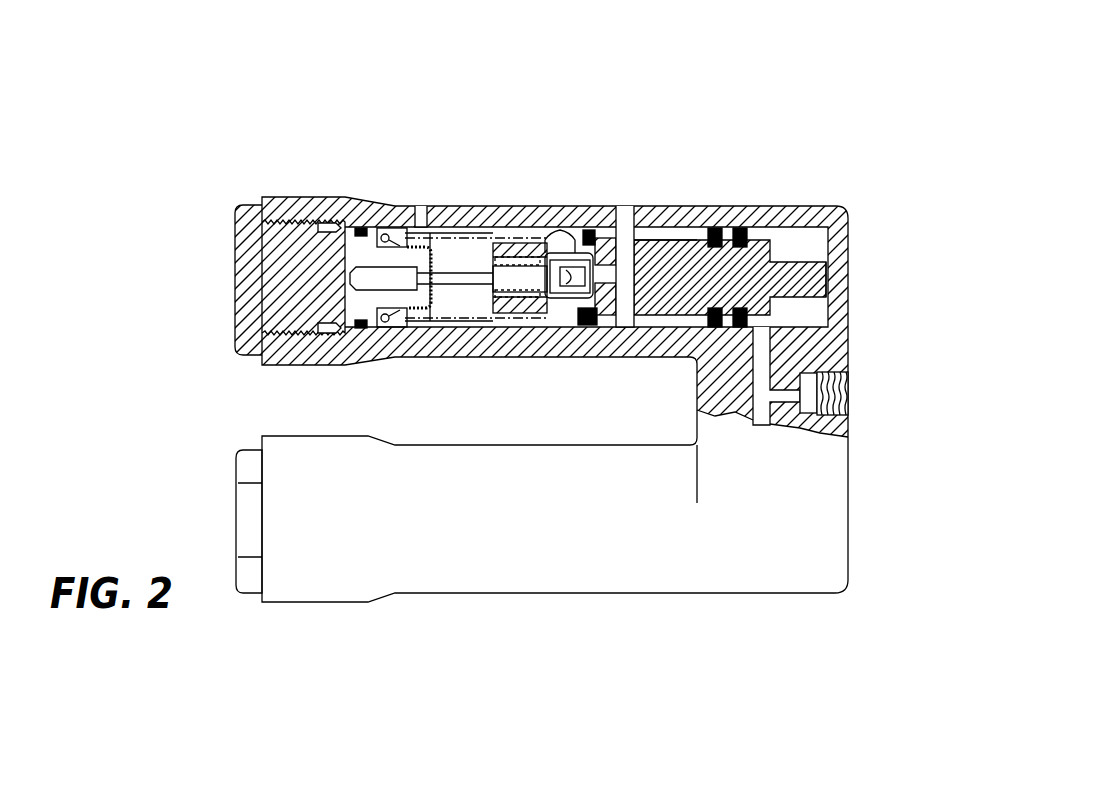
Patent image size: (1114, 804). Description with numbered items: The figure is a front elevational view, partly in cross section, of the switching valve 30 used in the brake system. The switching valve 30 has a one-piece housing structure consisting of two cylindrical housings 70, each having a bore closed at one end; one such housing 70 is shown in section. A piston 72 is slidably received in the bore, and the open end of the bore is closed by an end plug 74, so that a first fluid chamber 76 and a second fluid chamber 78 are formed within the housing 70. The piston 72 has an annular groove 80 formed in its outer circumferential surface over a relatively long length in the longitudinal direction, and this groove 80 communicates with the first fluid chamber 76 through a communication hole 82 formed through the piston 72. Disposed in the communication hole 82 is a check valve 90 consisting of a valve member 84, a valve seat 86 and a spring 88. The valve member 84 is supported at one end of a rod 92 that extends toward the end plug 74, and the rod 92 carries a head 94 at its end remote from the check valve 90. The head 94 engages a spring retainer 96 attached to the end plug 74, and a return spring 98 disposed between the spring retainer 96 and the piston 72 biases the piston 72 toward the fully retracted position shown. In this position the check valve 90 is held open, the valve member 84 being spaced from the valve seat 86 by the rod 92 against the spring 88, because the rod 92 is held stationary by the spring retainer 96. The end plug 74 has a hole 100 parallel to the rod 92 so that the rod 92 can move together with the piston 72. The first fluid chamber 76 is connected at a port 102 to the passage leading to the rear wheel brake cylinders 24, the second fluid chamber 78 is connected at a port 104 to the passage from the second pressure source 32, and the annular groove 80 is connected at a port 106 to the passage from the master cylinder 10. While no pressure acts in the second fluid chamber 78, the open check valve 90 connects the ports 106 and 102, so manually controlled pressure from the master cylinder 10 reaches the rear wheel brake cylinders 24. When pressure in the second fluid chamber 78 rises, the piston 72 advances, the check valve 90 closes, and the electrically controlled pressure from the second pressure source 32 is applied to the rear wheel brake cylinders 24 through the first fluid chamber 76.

The switching valve 30 is at (524, 150).
The cylindrical housing 70 is at (494, 203).
The piston 72 is at (762, 240).
The end plug 74 is at (243, 234).
The first fluid chamber 76 is at (466, 250).
The second fluid chamber 78 is at (817, 232).
The annular groove 80 is at (670, 232).
The communication hole 82 is at (628, 302).
The valve member 84 is at (570, 300).
The valve seat 86 is at (578, 230).
The spring 88 is at (548, 303).
The check valve 90 is at (558, 232).
The rod 92 is at (469, 283).
The head 94 is at (405, 318).
The spring retainer 96 is at (443, 243).
The return spring 98 is at (529, 243).
The hole 100 is at (356, 262).
The port 102 is at (413, 228).
The port 104 is at (848, 388).
The port 106 is at (628, 212).
The rear wheel brake cylinder 24 is at (422, 197).
The master cylinder 10 is at (625, 190).
The second pressure source 32 is at (947, 395).